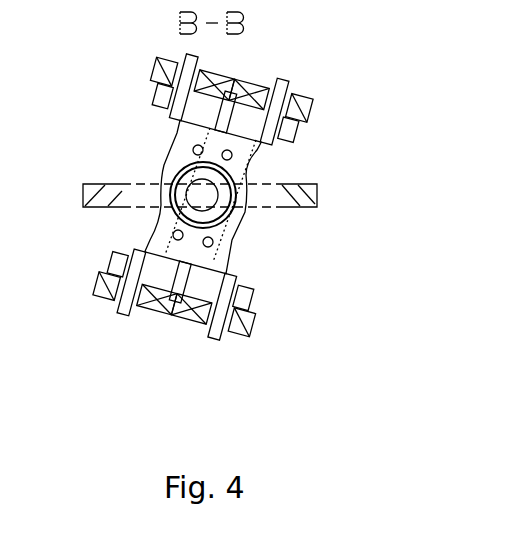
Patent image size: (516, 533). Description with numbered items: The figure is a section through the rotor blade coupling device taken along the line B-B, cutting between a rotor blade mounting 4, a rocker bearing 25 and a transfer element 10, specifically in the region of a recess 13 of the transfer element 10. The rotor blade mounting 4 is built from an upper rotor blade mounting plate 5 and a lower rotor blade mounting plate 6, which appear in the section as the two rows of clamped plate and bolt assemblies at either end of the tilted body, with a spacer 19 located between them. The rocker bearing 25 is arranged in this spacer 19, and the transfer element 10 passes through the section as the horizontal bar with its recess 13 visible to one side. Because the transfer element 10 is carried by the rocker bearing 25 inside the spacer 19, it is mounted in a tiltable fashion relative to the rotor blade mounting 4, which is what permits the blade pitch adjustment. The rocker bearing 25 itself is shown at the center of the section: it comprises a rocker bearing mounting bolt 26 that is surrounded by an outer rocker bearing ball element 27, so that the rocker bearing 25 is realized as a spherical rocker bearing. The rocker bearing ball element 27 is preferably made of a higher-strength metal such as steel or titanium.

The rotor blade mounting 4 is at (178, 243).
The upper rotor blade mounting plate 5 is at (158, 72).
The lower rotor blade mounting plate 6 is at (112, 284).
The transfer element 10 is at (318, 200).
The recess 13 is at (268, 202).
The spacer 19 is at (192, 128).
The rocker bearing 25 is at (174, 178).
The rocker bearing mounting bolt 26 is at (213, 190).
The rocker bearing ball element 27 is at (190, 200).